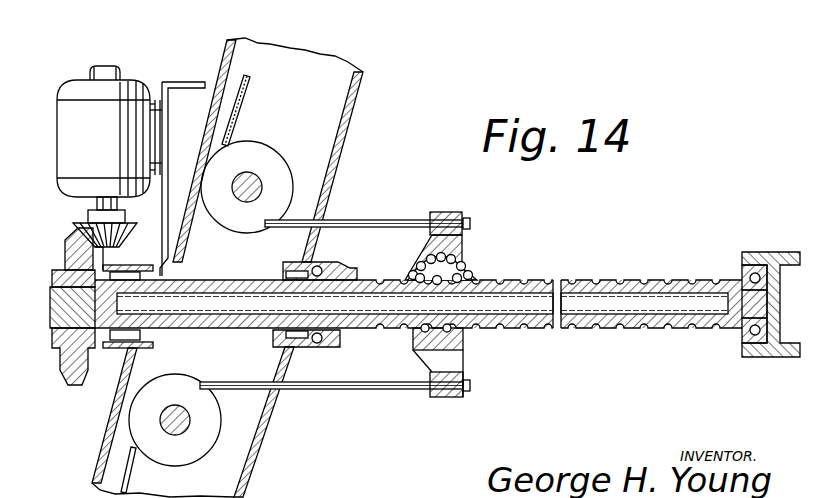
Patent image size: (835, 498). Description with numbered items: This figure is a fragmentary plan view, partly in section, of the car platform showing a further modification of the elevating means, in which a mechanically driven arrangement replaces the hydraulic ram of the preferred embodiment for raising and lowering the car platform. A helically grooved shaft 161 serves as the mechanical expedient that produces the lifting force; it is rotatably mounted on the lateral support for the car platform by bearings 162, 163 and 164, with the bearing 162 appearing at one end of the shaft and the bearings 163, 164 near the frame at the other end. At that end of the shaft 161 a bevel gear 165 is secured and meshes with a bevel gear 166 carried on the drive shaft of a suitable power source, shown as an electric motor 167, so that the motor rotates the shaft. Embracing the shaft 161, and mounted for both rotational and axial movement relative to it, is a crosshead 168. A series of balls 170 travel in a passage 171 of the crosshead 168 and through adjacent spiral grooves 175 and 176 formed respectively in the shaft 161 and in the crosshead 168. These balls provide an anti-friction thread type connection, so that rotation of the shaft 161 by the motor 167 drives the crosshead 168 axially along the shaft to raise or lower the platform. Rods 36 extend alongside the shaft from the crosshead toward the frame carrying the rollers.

The guide rods 36 is at (367, 218).
The helically grooved shaft 161 is at (614, 278).
The bearing 162 is at (742, 267).
The bearing 163 is at (123, 340).
The bearing 164 is at (318, 264).
The bevel gear 165 is at (65, 248).
The bevel gear 166 is at (114, 246).
The electric motor 167 is at (125, 102).
The crosshead 168 is at (463, 259).
The balls 170 is at (440, 262).
The passage 171 is at (462, 264).
The spiral groove 175 is at (540, 279).
The spiral groove 176 is at (463, 340).